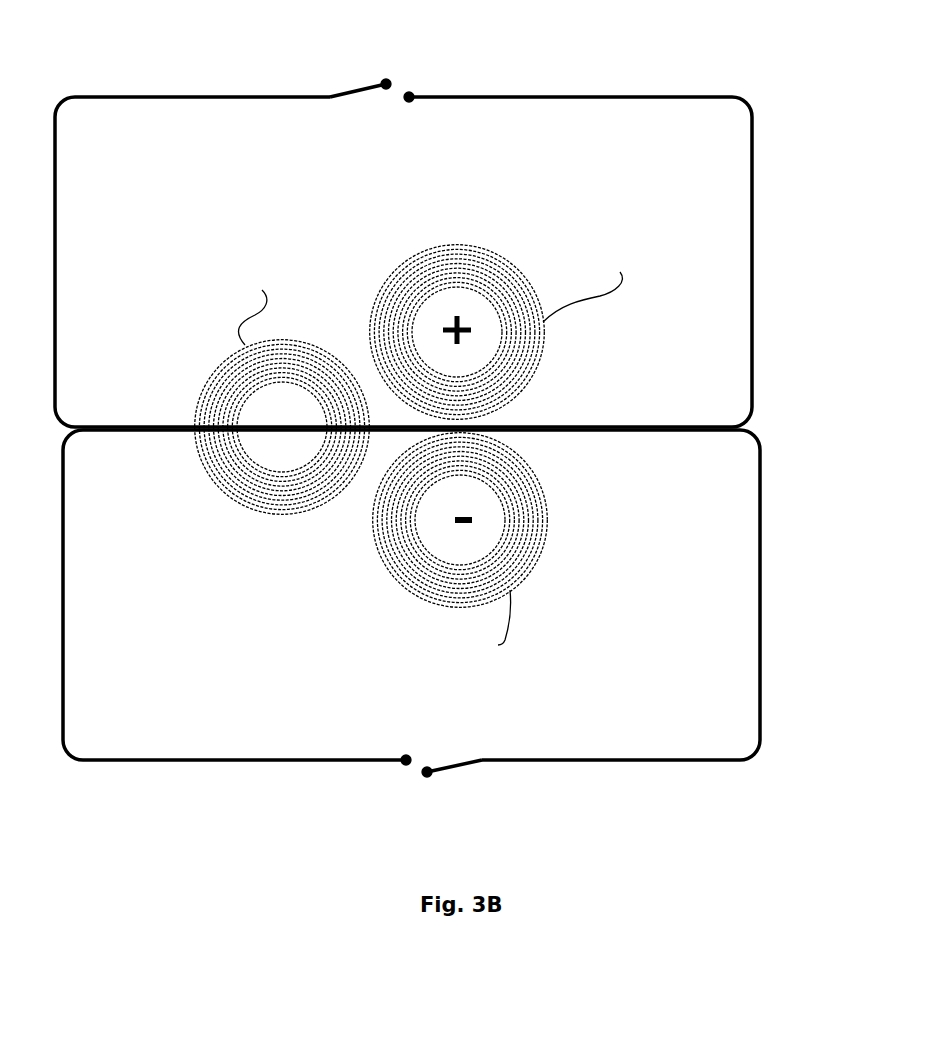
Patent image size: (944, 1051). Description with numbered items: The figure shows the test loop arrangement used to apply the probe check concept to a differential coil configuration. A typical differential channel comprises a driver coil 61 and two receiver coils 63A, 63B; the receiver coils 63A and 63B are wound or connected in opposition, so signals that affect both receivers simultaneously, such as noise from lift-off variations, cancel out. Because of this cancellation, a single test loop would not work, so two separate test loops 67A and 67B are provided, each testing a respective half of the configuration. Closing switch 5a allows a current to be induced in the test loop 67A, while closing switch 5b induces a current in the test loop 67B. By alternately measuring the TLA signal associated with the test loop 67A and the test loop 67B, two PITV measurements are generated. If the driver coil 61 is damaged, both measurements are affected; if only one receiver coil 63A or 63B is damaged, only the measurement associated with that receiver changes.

The switch 5a is at (392, 80).
The switch 5b is at (455, 769).
The driver coil 61 is at (283, 513).
The receiver coil 63A is at (485, 258).
The receiver coil 63B is at (537, 563).
The test loop 67A is at (752, 263).
The test loop 67B is at (760, 590).